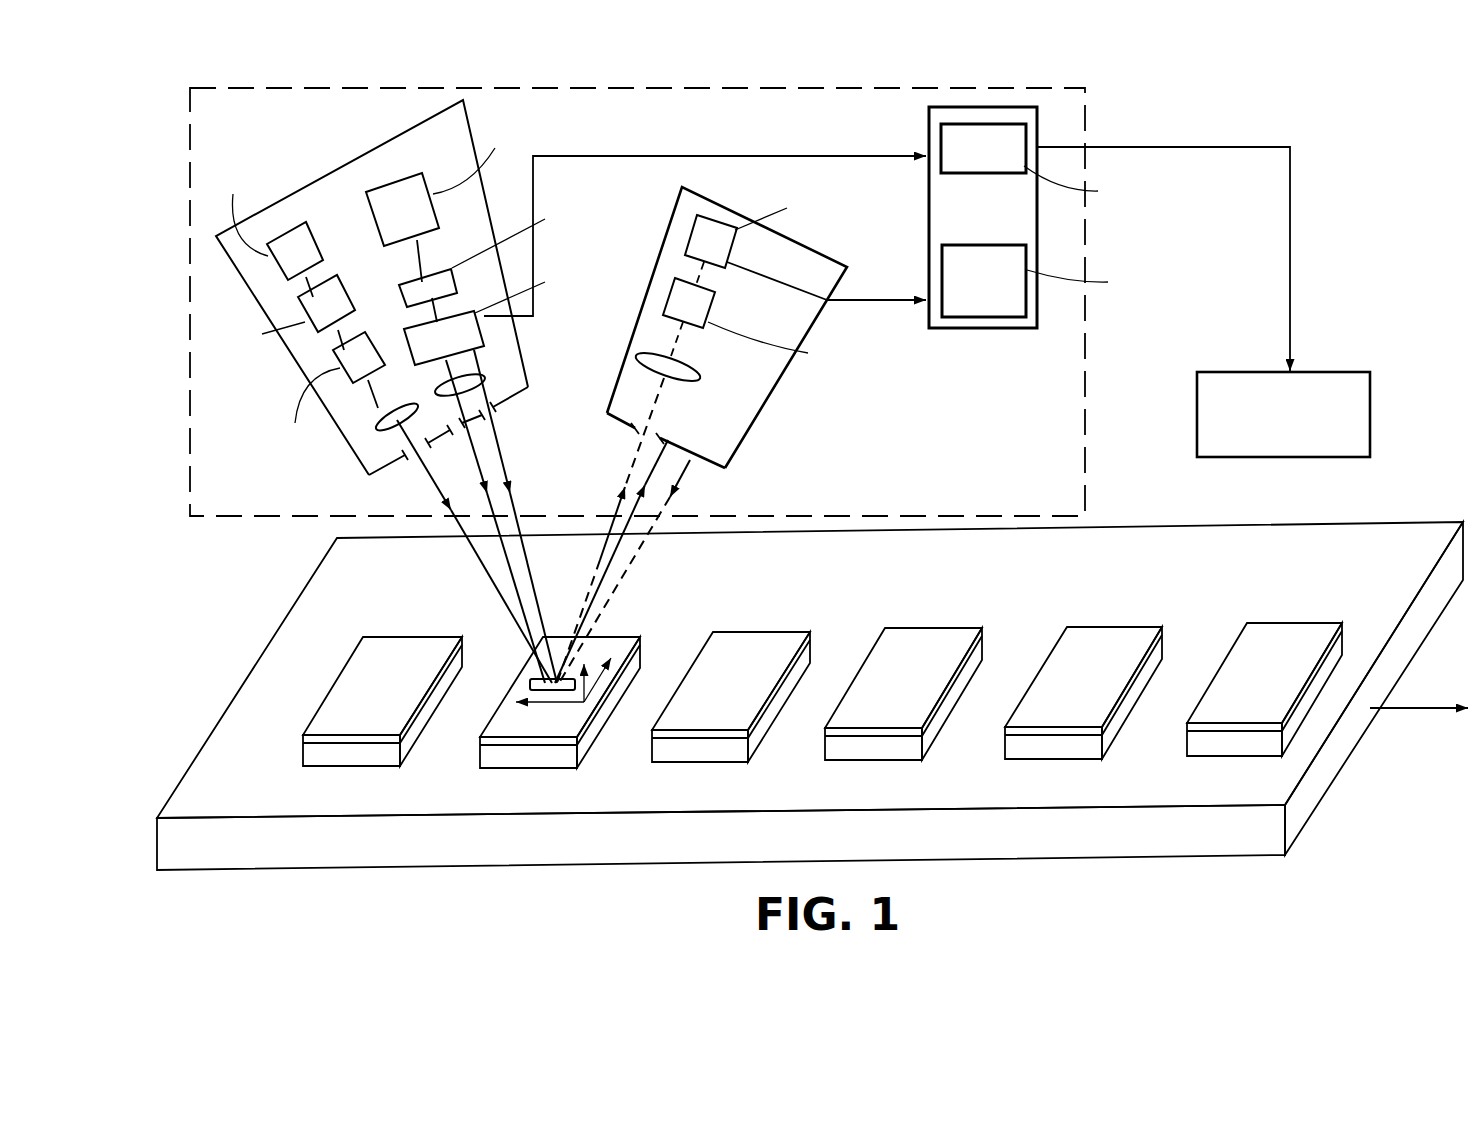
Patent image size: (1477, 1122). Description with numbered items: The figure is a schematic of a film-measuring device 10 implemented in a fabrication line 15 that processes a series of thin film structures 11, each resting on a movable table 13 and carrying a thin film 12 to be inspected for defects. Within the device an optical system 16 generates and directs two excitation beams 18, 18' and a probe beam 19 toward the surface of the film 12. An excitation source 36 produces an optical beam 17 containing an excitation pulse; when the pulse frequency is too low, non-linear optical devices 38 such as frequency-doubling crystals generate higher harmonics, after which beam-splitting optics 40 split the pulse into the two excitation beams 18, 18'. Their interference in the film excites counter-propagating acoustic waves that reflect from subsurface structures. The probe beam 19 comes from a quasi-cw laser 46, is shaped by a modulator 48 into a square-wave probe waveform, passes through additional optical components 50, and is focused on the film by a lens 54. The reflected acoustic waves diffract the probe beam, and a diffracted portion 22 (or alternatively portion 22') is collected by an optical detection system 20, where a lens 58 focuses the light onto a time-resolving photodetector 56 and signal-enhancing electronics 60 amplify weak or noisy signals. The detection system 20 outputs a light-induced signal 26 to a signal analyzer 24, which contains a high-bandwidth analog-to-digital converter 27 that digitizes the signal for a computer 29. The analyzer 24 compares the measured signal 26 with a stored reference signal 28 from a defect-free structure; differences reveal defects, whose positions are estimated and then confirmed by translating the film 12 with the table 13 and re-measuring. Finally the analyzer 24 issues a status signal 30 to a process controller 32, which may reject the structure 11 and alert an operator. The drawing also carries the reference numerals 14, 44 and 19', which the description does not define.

The film-measuring device 10 is at (1094, 101).
The thin film structure 11 is at (604, 738).
The thin film 12 is at (602, 640).
The movable table 13 is at (577, 850).
The thin film layer 14 is at (504, 757).
The fabrication line 15 is at (1322, 151).
The optical system 16 is at (289, 371).
The optical beam 17 is at (420, 252).
The excitation beam 18 is at (517, 516).
The excitation beam 18' is at (500, 521).
The probe beam 19 is at (467, 551).
The reflected light beam 19' is at (646, 543).
The optical detection system 20 is at (781, 405).
The diffracted portion of probe beam 22 is at (610, 530).
The diffracted portion of probe beam 22' is at (653, 571).
The signal analyzer 24 is at (985, 335).
The light-induced signal 26 is at (878, 303).
The high-bandwidth analog-to-digital converter 27 is at (955, 260).
The reference signal 28 is at (766, 155).
The computer 29 is at (970, 158).
The status signal 30 is at (1172, 146).
The process controller 32 is at (1197, 388).
The excitation source 36 is at (420, 186).
The non-linear optical devices 38 is at (438, 278).
The beam-splitting optics 40 is at (474, 318).
The lens 44 is at (488, 377).
The quasi-cw laser 46 is at (308, 238).
The modulator 48 is at (340, 288).
The optical components 50 is at (368, 343).
The lens 54 is at (388, 417).
The time-resolving photodetector 56 is at (713, 305).
The lens 58 is at (692, 372).
The signal-enhancing electronics 60 is at (720, 232).